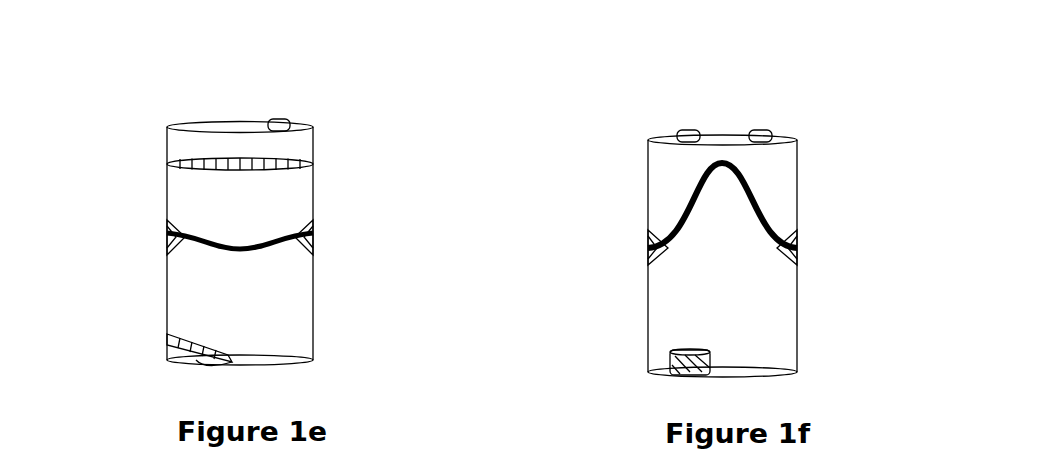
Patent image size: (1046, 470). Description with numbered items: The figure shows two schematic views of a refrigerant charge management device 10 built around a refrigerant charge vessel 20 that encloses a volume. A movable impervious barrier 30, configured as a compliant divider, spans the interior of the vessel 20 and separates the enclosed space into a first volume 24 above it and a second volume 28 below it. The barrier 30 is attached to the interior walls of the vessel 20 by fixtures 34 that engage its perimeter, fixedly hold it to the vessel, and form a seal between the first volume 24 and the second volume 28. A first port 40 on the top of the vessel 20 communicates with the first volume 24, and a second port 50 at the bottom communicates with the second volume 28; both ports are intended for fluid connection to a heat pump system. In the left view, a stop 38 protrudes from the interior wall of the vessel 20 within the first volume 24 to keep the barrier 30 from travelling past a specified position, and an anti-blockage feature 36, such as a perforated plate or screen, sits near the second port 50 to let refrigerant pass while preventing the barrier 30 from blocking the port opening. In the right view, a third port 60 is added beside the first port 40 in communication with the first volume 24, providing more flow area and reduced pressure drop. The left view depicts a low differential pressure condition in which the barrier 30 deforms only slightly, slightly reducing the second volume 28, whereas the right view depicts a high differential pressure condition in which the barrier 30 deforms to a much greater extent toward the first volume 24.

In FIG. 1E, the charge management device 10 is at (142, 122).
In FIG. 1F, the charge management device 10 is at (627, 120).
In FIG. 1E, the refrigerant charge vessel 20 is at (166, 146).
In FIG. 1F, the refrigerant charge vessel 20 is at (648, 146).
In FIG. 1E, the first volume 24 is at (224, 219).
In FIG. 1F, the first volume 24 is at (786, 180).
In FIG. 1E, the second volume 28 is at (224, 304).
In FIG. 1F, the second volume 28 is at (706, 304).
In FIG. 1E, the movable impervious barrier 30 is at (313, 240).
In FIG. 1F, the movable impervious barrier 30 is at (797, 252).
In FIG. 1E, the fixture 34 is at (167, 249).
In FIG. 1F, the fixture 34 is at (648, 262).
In FIG. 1E, the anti-blockage feature 36 is at (172, 336).
In FIG. 1F, the anti-blockage feature 36 is at (670, 356).
In FIG. 1E, the stop 38 is at (313, 163).
In FIG. 1E, the first port 40 is at (283, 118).
In FIG. 1F, the first port 40 is at (762, 130).
In FIG. 1E, the second port 50 is at (198, 367).
In FIG. 1F, the second port 50 is at (672, 374).
In FIG. 1F, the third port 60 is at (690, 130).